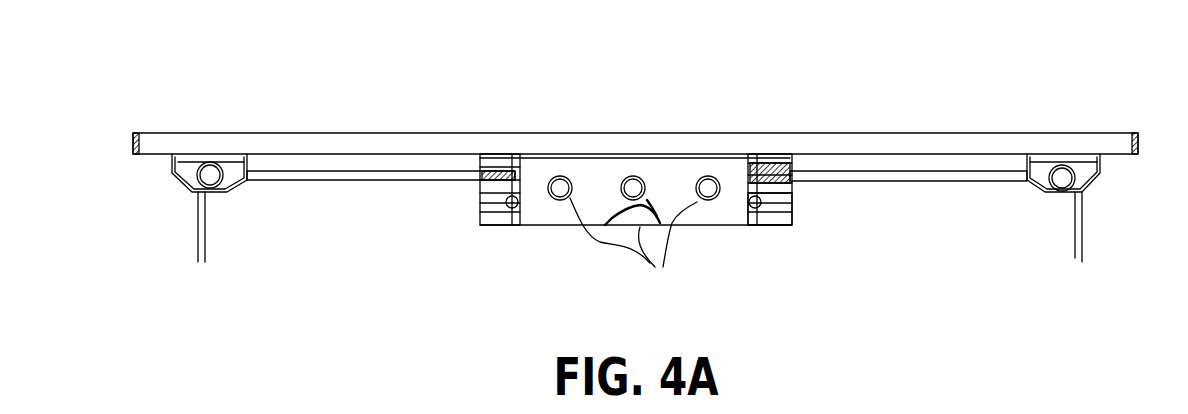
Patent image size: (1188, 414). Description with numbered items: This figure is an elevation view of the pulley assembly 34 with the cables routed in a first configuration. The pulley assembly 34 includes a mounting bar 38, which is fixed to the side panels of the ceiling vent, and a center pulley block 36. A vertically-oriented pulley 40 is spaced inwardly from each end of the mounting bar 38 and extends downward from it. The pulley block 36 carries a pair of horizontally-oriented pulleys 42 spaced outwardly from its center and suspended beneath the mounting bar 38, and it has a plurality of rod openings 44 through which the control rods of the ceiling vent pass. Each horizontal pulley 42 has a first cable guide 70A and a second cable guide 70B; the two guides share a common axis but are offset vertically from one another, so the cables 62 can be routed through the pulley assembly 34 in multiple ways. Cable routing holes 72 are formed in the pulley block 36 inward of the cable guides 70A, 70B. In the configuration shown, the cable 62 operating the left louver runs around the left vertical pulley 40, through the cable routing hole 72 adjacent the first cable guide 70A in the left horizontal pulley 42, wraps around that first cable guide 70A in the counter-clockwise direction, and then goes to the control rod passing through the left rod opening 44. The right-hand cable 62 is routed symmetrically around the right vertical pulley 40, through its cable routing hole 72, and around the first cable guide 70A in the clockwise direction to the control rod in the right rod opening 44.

The pulley assembly 34 is at (629, 95).
The mounting bar 38 is at (910, 133).
The vertically-oriented pulley 40 is at (175, 182).
The cable 62 is at (355, 181).
The center pulley block 36 is at (713, 227).
The horizontally-oriented pulley 42 is at (492, 228).
The first cable guide 70A is at (815, 167).
The second cable guide 70B is at (792, 200).
The cable routing hole 72 is at (532, 207).
The rod opening 44 is at (633, 243).